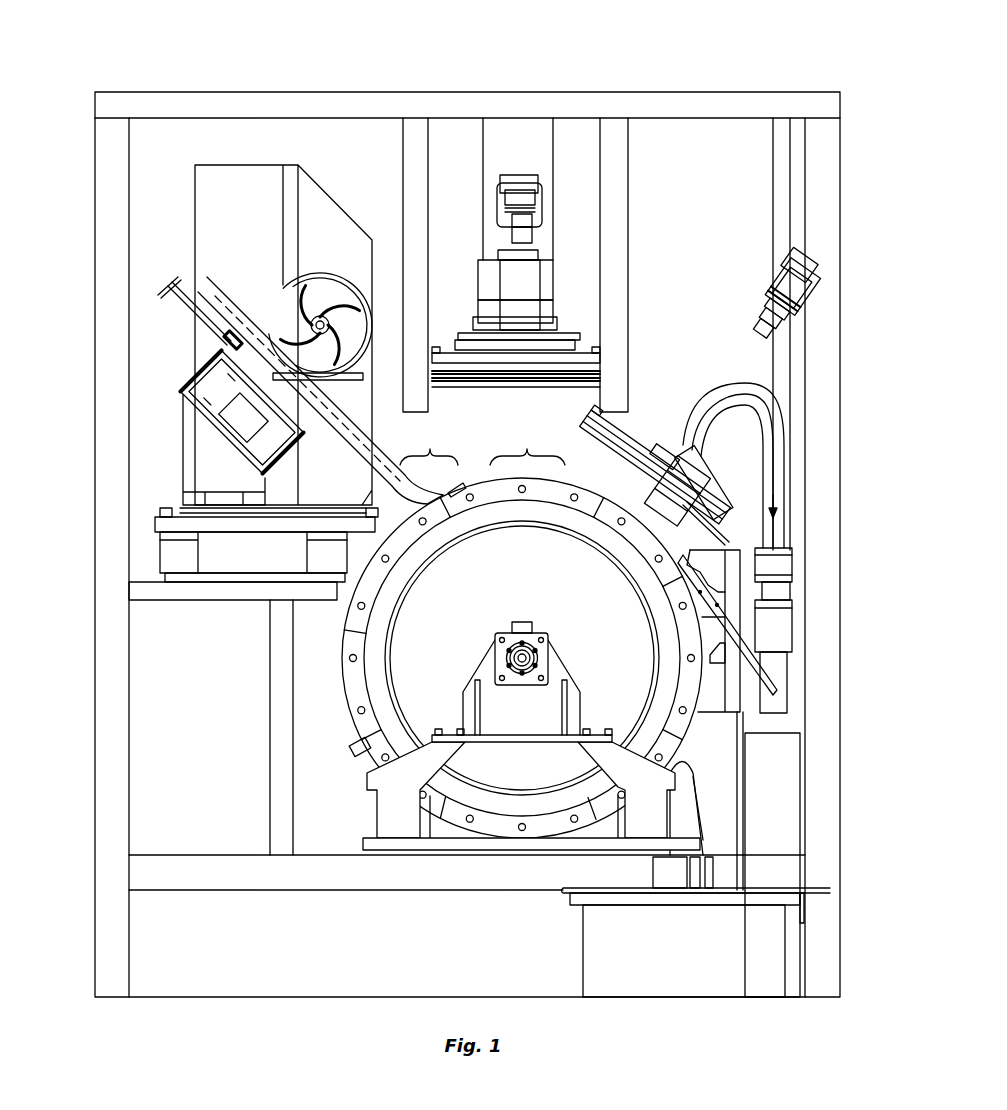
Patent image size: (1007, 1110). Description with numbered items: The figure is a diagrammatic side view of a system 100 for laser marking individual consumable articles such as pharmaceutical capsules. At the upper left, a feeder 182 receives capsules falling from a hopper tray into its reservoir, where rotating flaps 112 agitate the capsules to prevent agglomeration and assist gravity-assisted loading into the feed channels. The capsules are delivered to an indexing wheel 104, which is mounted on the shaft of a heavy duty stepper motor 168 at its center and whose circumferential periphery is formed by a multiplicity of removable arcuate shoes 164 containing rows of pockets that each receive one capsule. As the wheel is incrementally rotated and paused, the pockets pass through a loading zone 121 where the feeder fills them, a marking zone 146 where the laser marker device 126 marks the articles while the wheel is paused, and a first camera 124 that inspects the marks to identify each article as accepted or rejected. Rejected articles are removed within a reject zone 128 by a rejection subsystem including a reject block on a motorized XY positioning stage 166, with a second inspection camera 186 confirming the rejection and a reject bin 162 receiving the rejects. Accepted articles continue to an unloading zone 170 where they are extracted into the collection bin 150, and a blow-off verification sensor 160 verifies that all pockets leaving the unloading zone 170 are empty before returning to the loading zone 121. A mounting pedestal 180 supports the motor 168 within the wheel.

The system 100 is at (760, 62).
The indexing wheel 104 is at (508, 603).
The rotating flaps 112 is at (277, 247).
The loading zone 121 is at (429, 442).
The first camera 124 is at (532, 232).
The laser marker device 126 is at (593, 283).
The reject zone 128 is at (590, 517).
The marking zone 146 is at (527, 438).
The collection bin 150 is at (678, 955).
The blow-off verification sensor 160 is at (360, 748).
The reject bin 162 is at (758, 813).
The arcuate shoes 164 is at (447, 508).
The motorized XY positioning stage 166 is at (672, 427).
The stepper motors 168 is at (547, 652).
The unloading zone 170 is at (663, 713).
The mounting pedestal 180 is at (503, 633).
The feeder 182 is at (358, 193).
The second inspection camera 186 is at (762, 310).